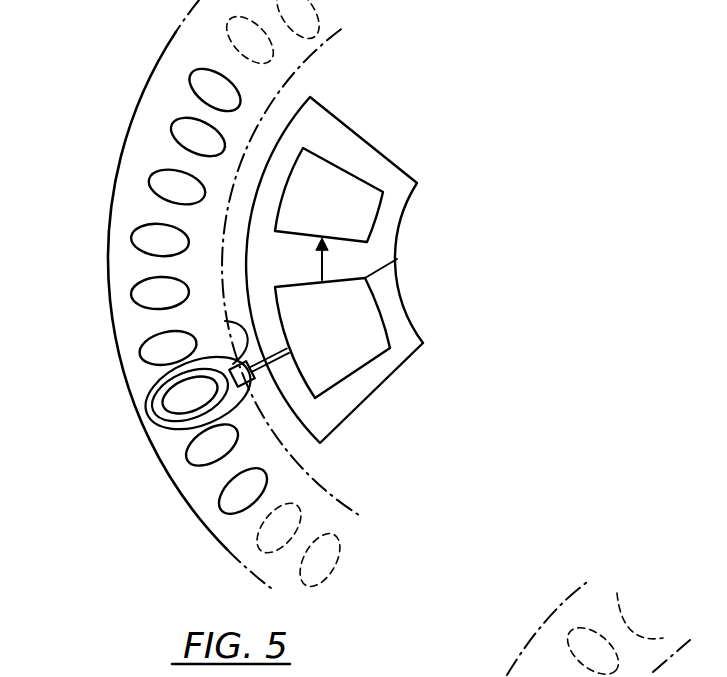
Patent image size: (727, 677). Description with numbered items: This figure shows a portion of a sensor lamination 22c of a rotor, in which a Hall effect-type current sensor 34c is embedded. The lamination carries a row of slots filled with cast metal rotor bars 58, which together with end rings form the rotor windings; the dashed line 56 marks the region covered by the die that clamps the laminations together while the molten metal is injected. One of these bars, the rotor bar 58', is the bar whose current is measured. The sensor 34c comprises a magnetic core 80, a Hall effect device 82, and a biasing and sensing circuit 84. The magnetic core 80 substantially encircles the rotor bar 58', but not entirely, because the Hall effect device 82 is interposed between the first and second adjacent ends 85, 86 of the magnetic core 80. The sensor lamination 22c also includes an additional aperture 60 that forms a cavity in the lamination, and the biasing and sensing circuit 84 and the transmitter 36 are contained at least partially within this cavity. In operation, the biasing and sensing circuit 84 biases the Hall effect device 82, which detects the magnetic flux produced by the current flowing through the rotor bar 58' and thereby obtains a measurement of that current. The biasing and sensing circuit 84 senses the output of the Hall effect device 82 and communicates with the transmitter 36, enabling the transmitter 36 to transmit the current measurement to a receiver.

The sensor lamination 22c is at (136, 109).
The dashed line 56 is at (270, 105).
The rotor bars 58 is at (192, 296).
The rotor bar 58' is at (132, 395).
The magnetic core 80 is at (160, 432).
The aperture 60 is at (410, 220).
The transmitter 36 is at (357, 175).
The sensor 34c is at (378, 333).
The biasing and sensing circuit 84 is at (397, 259).
The Hall effect device 82 is at (252, 381).
The first end of magnetic core 85 is at (230, 329).
The second end of magnetic core 86 is at (250, 386).